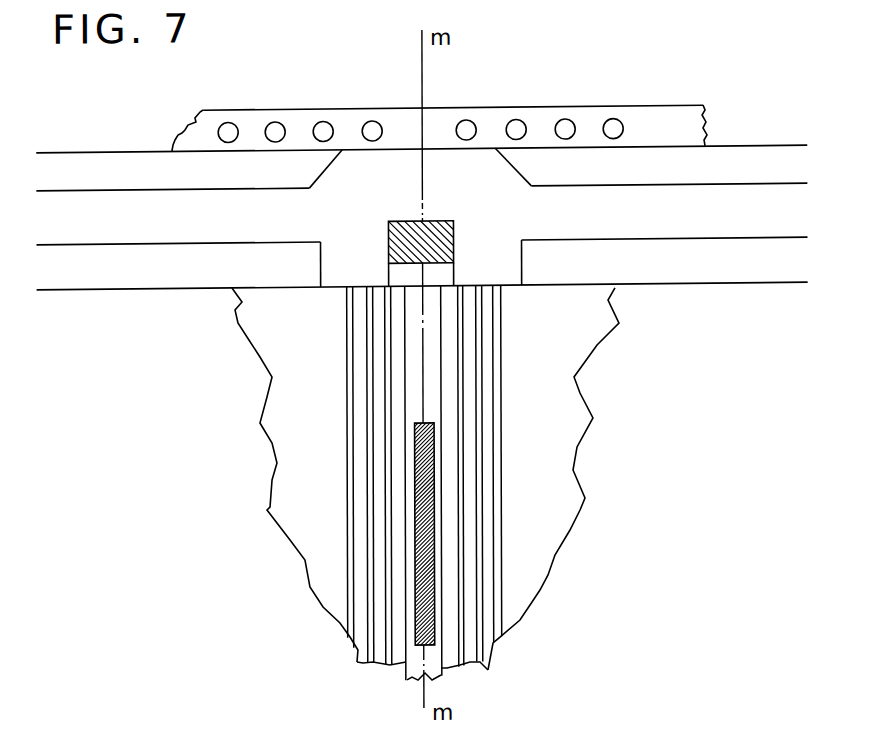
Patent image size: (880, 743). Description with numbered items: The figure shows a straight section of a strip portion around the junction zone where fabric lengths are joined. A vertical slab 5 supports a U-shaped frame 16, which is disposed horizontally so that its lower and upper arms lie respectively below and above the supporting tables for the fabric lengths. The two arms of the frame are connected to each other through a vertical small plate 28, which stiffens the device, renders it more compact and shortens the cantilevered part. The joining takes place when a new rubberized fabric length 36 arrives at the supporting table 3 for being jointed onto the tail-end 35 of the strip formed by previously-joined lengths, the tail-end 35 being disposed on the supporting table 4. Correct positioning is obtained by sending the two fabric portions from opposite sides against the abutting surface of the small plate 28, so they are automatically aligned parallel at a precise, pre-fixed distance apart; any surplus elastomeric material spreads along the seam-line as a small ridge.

The supporting table 3 is at (70, 168).
The supporting table 4 is at (706, 250).
The vertical slab 5 is at (608, 160).
The U-shaped frame 16 is at (437, 221).
The vertical small plate 28 is at (414, 517).
The tail-end 35 is at (680, 391).
The rubberized fabric length 36 is at (325, 312).